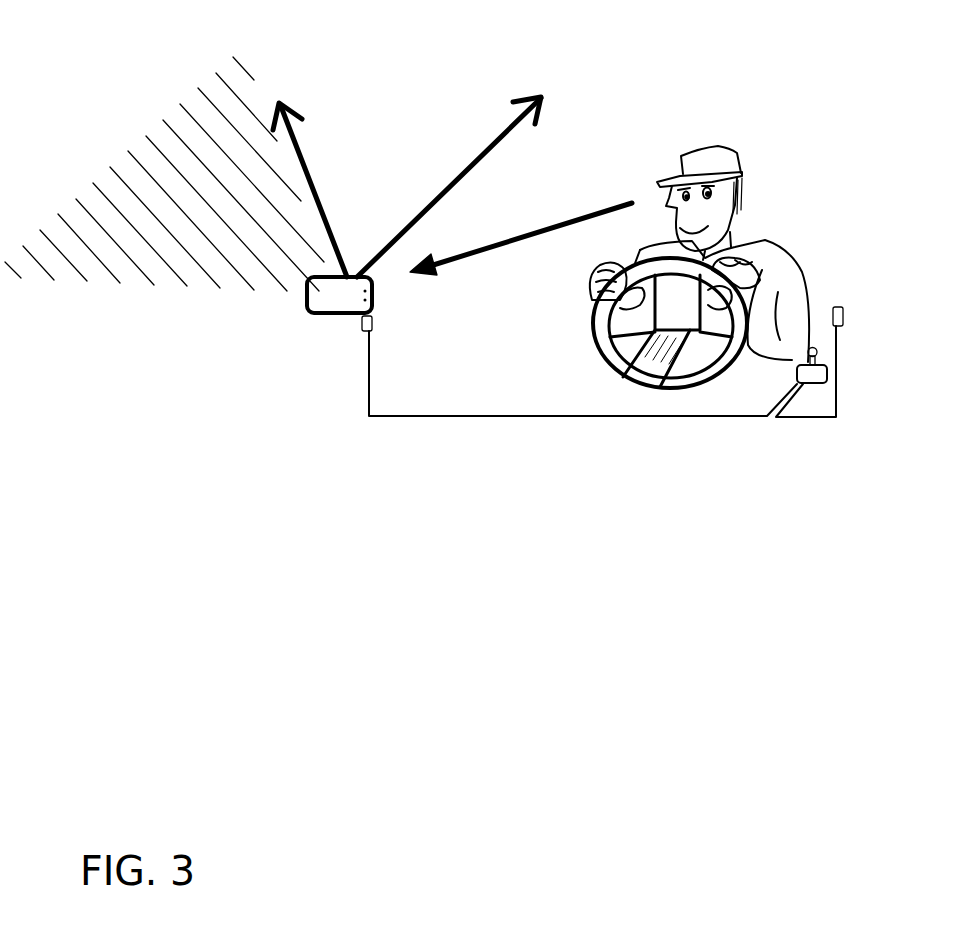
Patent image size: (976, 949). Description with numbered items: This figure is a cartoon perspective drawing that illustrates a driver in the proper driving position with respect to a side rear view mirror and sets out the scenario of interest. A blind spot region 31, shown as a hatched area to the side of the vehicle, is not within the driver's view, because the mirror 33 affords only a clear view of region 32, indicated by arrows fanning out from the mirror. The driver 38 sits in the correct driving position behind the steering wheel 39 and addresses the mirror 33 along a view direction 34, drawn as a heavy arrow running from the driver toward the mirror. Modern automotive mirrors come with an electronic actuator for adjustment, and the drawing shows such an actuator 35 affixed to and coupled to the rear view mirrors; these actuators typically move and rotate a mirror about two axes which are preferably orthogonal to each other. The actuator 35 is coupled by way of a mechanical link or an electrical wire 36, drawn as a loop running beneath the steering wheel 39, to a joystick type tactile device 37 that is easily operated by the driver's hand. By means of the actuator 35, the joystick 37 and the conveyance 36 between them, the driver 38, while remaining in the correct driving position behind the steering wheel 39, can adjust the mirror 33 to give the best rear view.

The blind spot region 31 is at (187, 115).
The clear view region 32 is at (368, 107).
The mirror 33 is at (320, 297).
The view direction 34 is at (560, 202).
The actuator 35 is at (362, 328).
The electrical wire 36 is at (465, 416).
The joystick type tactile device 37 is at (827, 382).
The driver 38 is at (745, 252).
The steering wheel 39 is at (598, 322).